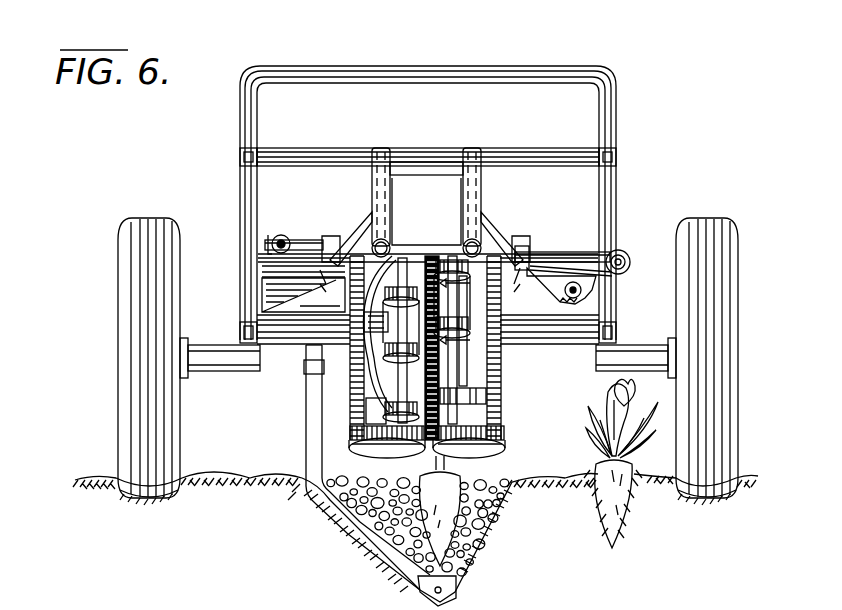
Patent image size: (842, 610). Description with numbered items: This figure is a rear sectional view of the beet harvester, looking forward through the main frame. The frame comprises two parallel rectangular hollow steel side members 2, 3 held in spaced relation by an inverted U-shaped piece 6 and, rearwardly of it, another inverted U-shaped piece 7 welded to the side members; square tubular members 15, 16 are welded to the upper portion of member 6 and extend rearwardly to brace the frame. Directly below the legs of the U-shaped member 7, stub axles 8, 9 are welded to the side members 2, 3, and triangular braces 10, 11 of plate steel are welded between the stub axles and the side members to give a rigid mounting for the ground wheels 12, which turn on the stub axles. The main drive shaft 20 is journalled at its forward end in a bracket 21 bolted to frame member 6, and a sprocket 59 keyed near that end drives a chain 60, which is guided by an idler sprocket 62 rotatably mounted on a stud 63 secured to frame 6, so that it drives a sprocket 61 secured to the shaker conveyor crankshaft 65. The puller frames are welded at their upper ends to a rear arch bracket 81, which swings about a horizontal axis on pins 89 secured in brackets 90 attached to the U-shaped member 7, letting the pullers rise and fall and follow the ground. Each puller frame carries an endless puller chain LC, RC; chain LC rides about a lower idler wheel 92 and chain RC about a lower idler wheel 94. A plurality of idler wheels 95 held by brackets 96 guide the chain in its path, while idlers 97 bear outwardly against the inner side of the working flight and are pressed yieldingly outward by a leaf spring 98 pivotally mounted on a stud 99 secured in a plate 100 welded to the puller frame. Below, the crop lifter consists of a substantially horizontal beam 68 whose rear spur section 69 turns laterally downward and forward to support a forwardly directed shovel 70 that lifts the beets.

The inverted U-shaped piece 7 is at (410, 68).
The inverted U-shaped piece 6 is at (497, 150).
The square tubular member 15 is at (238, 155).
The square tubular piece 16 is at (618, 155).
The rear arch bracket 81 is at (483, 186).
The sprocket 59 is at (318, 244).
The main drive shaft 20 is at (296, 240).
The bracket 21 is at (275, 236).
The chain 60 is at (547, 254).
The idler sprocket 62 is at (628, 258).
The stud 63 is at (622, 256).
The shaker conveyor crankshaft 65 is at (578, 270).
The sprocket 61 is at (548, 300).
The bracket 90 is at (575, 282).
The pin 89 is at (320, 286).
The plate 100 is at (352, 315).
The horizontal beam 68 is at (340, 390).
The idlers 97 is at (410, 414).
The idler wheels 95 is at (470, 354).
The brackets 96 is at (470, 380).
The puller chain LC is at (339, 443).
The puller chain RC is at (514, 436).
The lower idler wheel 94 is at (500, 448).
The stud 99 is at (332, 350).
The leaf spring 98 is at (332, 368).
The lower idler wheel 92 is at (360, 456).
The spur section 69 is at (368, 522).
The shovel 70 is at (462, 576).
The hollow steel member 3 is at (244, 346).
The stub axle 8 is at (236, 372).
The triangular brace 10 is at (208, 348).
The triangular brace 11 is at (612, 328).
The hollow steel member 2 is at (580, 346).
The stub axle 9 is at (648, 346).
The ground wheels 12 is at (150, 494).